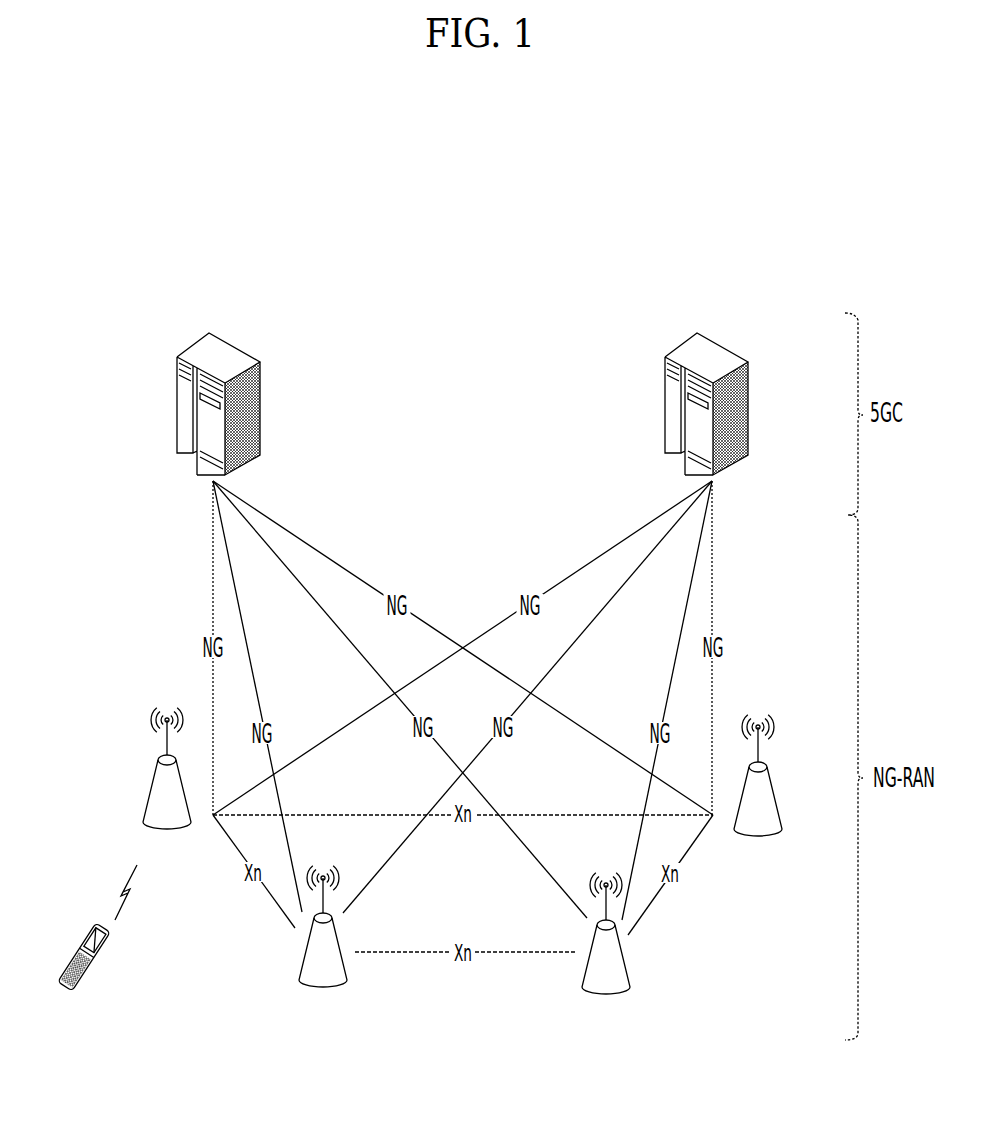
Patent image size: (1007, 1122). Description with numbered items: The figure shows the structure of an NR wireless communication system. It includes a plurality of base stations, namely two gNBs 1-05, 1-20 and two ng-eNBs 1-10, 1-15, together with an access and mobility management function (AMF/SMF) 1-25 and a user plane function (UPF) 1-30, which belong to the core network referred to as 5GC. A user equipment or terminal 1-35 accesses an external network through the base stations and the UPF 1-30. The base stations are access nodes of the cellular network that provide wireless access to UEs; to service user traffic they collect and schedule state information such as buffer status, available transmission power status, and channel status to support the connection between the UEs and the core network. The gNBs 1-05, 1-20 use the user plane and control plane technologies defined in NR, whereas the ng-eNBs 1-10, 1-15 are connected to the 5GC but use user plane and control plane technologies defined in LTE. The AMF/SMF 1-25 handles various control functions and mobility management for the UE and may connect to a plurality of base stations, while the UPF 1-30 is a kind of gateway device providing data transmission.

The access and mobility management function (AMF/SMF) 1-25 is at (185, 348).
The user plane function (UPF) 1-30 is at (673, 348).
The gNB 1-05 is at (153, 771).
The gNB 1-20 is at (772, 776).
The ng-eNB 1-10 is at (302, 1032).
The ng-eNB 1-15 is at (580, 1040).
The user equipment (UE) 1-35 is at (87, 927).